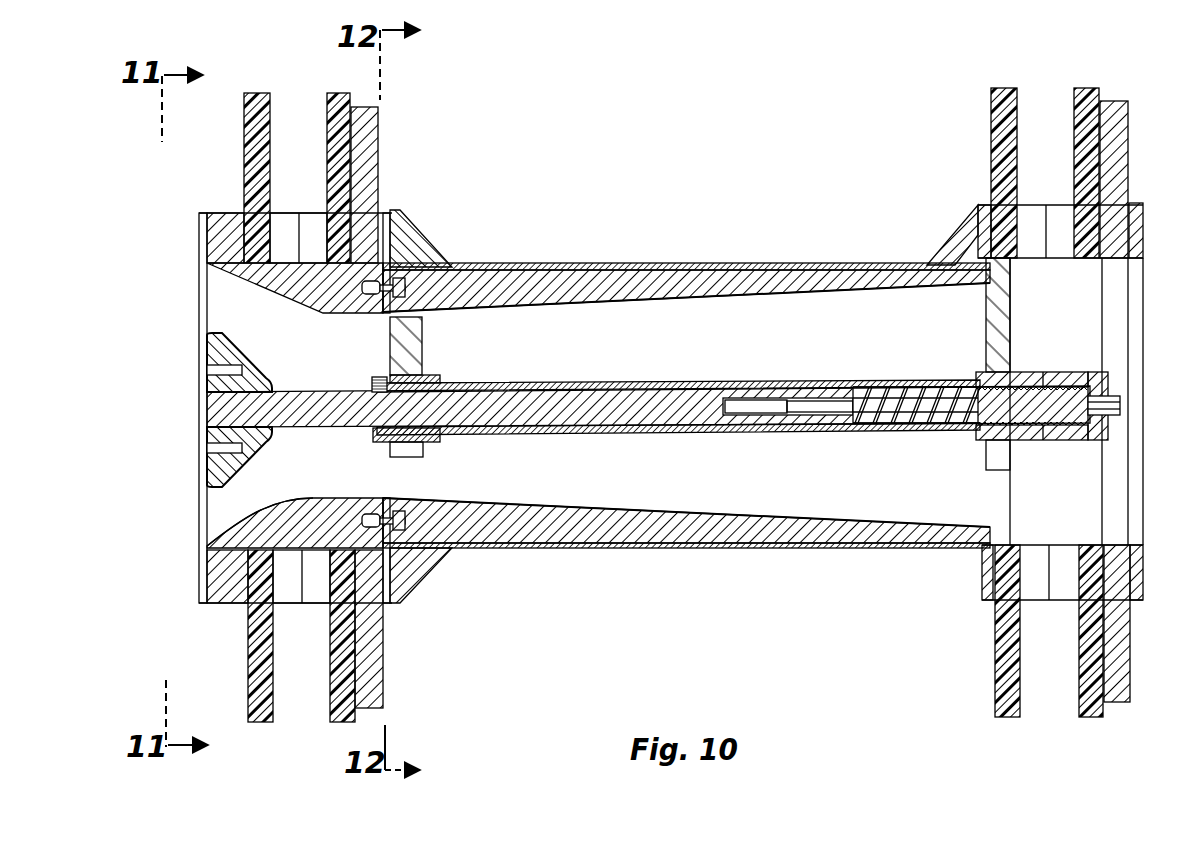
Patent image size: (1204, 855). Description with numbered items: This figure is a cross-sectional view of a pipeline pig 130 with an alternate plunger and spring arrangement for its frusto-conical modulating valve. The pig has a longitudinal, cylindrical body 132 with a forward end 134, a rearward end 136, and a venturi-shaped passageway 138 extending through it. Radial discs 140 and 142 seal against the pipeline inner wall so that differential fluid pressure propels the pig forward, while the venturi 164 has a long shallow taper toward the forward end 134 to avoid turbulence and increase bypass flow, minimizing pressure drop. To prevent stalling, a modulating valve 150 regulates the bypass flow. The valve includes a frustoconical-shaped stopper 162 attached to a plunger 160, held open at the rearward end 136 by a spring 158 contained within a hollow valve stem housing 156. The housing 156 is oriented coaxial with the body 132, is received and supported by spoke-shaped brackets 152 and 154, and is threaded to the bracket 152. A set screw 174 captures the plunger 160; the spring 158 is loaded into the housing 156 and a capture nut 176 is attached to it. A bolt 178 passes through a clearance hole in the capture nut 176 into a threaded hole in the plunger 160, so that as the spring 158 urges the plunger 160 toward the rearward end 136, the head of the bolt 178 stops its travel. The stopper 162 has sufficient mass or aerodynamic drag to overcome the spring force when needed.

The pipeline pig 130 is at (686, 345).
The cylindrical body 132 is at (660, 263).
The forward end 134 is at (1130, 665).
The rearward end 136 is at (180, 628).
The venturi-shaped passageway 138 is at (748, 327).
The radial disc 140 is at (254, 85).
The radial disc 142 is at (1008, 75).
The modulating valve 150 is at (700, 410).
The spoke-shaped bracket 152 is at (985, 330).
The spoke-shaped bracket 154 is at (397, 343).
The valve stem housing 156 is at (702, 432).
The spring 158 is at (890, 383).
The plunger 160 is at (542, 407).
The frustoconical-shaped stopper 162 is at (207, 352).
The venturi 164 is at (312, 493).
The set screw 174 is at (378, 377).
The capture nut 176 is at (1097, 378).
The bolt 178 is at (1120, 405).